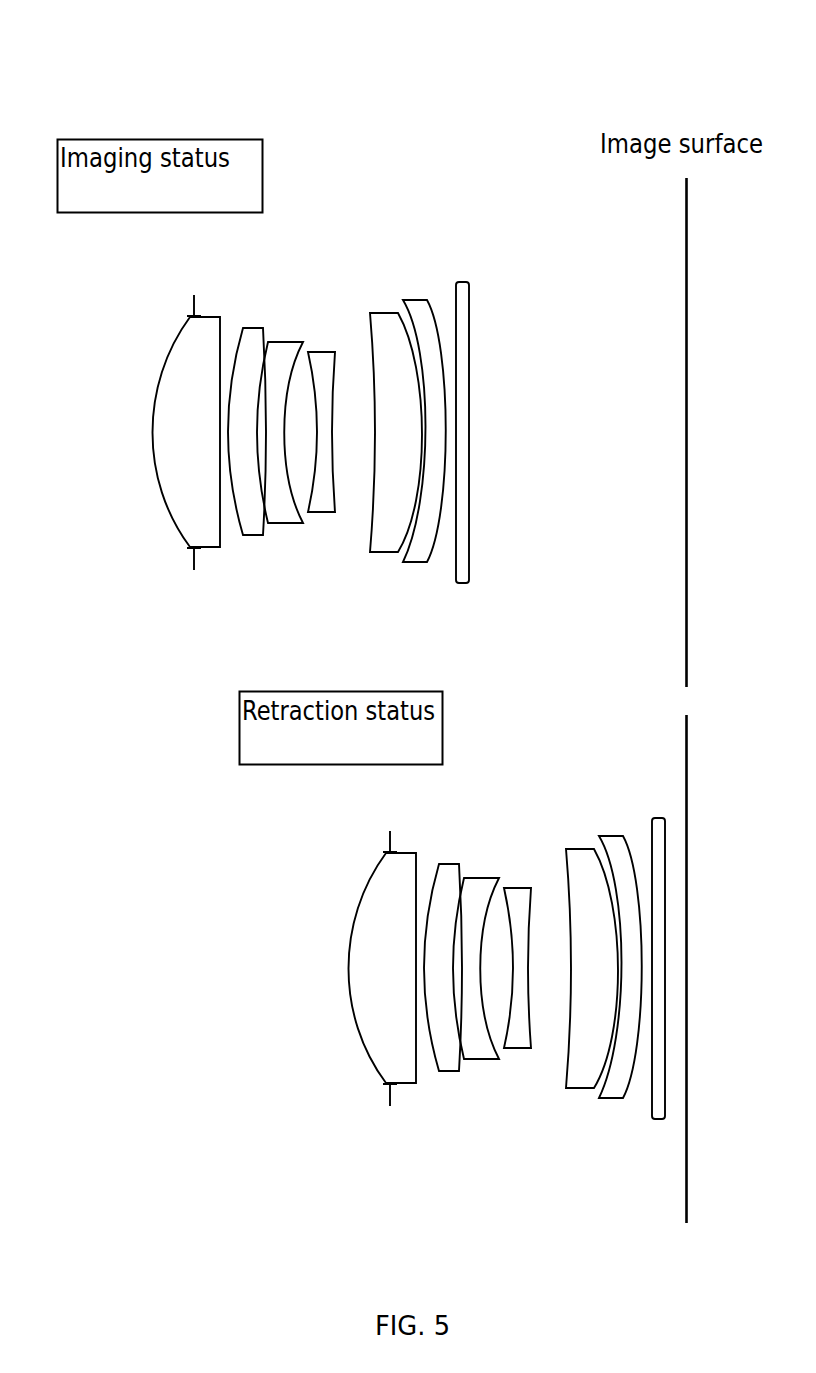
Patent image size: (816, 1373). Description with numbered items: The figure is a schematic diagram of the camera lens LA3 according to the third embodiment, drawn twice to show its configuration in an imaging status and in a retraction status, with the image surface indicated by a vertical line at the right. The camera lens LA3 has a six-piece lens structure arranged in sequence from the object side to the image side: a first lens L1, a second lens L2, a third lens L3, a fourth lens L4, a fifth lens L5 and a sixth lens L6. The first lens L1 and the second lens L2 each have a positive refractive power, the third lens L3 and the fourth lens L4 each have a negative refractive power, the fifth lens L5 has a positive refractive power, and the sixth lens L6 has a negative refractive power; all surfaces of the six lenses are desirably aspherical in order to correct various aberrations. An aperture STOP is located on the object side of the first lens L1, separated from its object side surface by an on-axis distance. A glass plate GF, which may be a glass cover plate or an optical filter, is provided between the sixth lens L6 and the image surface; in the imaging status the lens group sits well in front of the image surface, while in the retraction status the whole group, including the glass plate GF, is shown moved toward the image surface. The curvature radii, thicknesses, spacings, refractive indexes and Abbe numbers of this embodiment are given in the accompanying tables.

The camera lens LA3 is at (409, 560).
The first lens L1 is at (285, 676).
The second lens L2 is at (345, 684).
The third lens L3 is at (378, 686).
The fourth lens L4 is at (419, 682).
The fifth lens L5 is at (488, 686).
The sixth lens L6 is at (522, 684).
The glass plate GF is at (556, 684).
The aperture STOP is at (286, 700).